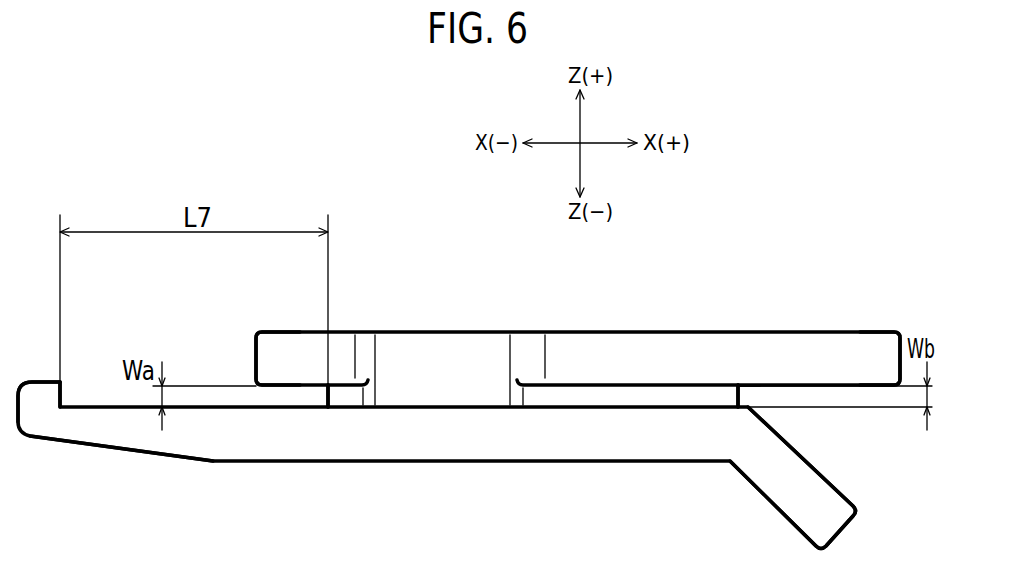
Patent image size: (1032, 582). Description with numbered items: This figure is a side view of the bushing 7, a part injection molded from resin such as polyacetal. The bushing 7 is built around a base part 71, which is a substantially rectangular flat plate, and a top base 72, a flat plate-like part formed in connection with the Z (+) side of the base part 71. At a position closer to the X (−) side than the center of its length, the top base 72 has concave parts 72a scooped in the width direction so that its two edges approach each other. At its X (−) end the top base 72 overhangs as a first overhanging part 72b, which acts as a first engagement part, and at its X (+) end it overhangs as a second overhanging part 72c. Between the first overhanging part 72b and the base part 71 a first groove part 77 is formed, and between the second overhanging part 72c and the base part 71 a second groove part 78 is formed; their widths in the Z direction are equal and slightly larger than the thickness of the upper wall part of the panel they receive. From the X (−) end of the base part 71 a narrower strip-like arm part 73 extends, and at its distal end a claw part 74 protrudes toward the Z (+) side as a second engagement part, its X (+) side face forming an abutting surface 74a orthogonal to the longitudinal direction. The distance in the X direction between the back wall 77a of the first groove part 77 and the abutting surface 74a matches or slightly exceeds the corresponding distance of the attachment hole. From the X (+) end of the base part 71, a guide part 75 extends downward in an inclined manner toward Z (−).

The bushing 7 is at (579, 306).
The base part 71 is at (615, 462).
The top base 72 is at (828, 331).
The concave part 72a is at (449, 342).
The first overhanging part 72b is at (300, 331).
The second overhanging part 72c is at (877, 331).
The arm part 73 is at (119, 452).
The claw part 74 is at (42, 379).
The abutting surface 74a is at (62, 396).
The guide part 75 is at (848, 495).
The first groove part 77 is at (249, 393).
The back wall 77a is at (328, 395).
The second groove part 78 is at (762, 404).